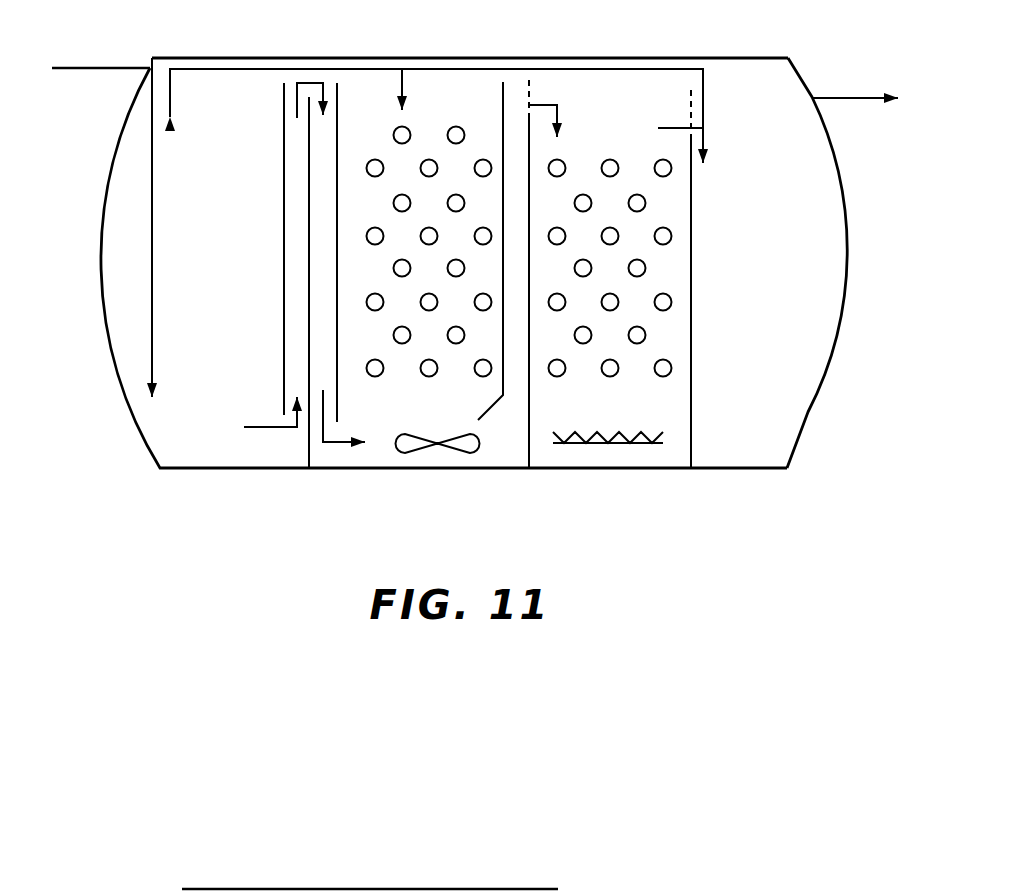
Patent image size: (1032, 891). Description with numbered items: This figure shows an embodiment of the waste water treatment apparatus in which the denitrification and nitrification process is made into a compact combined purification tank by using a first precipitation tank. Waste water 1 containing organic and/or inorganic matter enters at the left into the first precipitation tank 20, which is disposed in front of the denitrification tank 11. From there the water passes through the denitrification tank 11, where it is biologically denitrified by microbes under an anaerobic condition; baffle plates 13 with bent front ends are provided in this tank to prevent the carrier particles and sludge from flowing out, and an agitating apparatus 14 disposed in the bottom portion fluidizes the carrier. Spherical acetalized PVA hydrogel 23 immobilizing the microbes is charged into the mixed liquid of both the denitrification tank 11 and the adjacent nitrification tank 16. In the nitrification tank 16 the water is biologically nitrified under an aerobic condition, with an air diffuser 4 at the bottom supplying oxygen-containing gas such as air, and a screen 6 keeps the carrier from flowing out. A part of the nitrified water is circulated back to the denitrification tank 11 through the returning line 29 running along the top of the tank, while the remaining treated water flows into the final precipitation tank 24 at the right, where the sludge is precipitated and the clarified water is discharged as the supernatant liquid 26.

The waste water 1 is at (88, 68).
The air diffuser 4 is at (647, 450).
The screen 6 is at (531, 95).
The denitrification tank 11 is at (378, 445).
The baffle plate 13 is at (284, 203).
The agitating apparatus 14 is at (473, 450).
The nitrification tank 16 is at (562, 450).
The first precipitation tank 20 is at (125, 305).
The spherical acetalized PVA hydrogel 23 is at (373, 160).
The final precipitation tank 24 is at (822, 291).
The supernatant liquid 26 is at (845, 98).
The returning line 29 is at (505, 58).